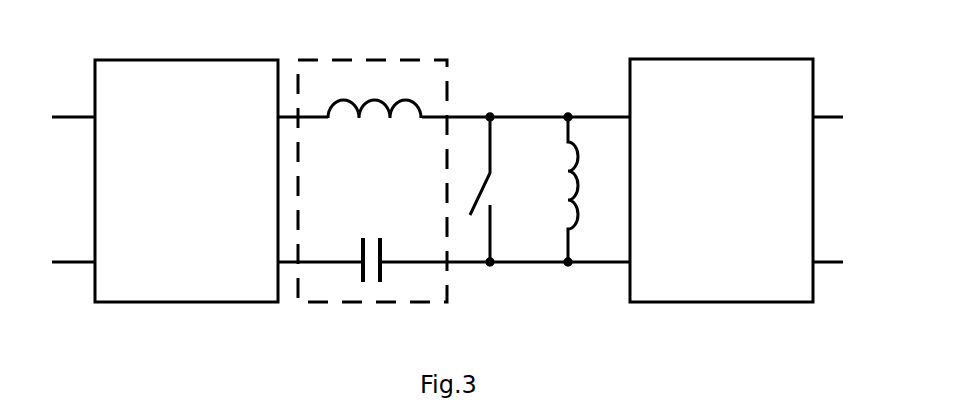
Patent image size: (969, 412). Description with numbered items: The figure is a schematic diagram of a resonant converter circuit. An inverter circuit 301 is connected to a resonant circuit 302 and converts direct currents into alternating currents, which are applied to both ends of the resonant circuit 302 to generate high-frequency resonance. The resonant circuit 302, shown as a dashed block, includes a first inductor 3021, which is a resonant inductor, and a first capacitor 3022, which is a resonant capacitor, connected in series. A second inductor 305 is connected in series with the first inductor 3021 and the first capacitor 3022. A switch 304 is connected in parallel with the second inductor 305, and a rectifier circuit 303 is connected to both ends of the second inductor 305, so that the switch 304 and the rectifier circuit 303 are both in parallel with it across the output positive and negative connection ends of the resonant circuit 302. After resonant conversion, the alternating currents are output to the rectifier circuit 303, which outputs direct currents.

The inverter circuit 301 is at (192, 58).
The resonant circuit 302 is at (382, 58).
The first inductor 3021 is at (370, 104).
The first capacitor 3022 is at (370, 250).
The switch 304 is at (488, 195).
The second inductor 305 is at (563, 230).
The rectifier circuit 303 is at (727, 58).